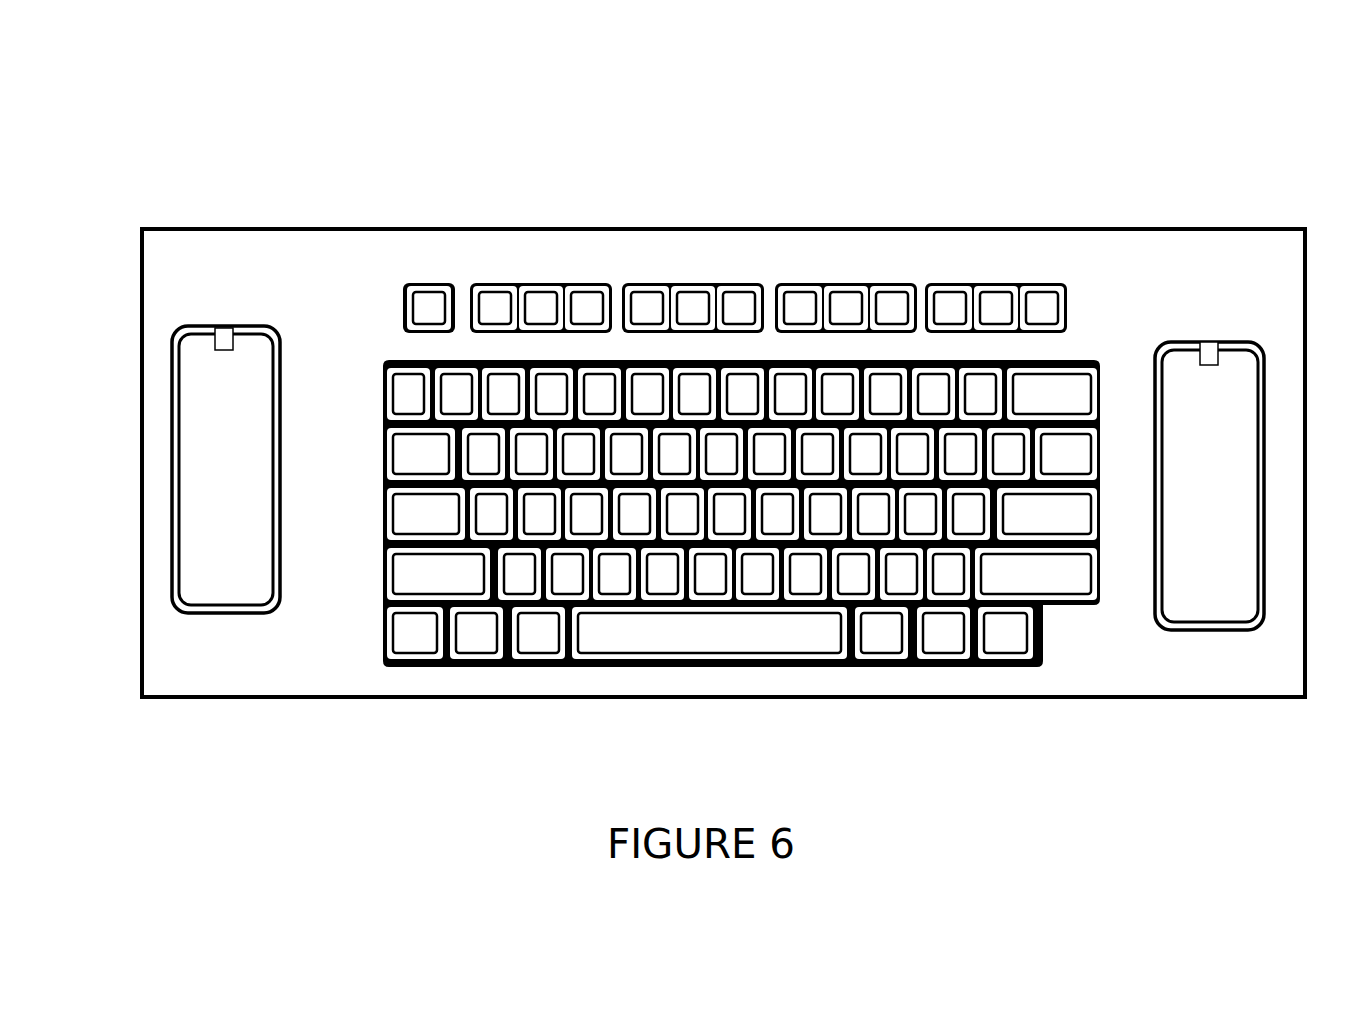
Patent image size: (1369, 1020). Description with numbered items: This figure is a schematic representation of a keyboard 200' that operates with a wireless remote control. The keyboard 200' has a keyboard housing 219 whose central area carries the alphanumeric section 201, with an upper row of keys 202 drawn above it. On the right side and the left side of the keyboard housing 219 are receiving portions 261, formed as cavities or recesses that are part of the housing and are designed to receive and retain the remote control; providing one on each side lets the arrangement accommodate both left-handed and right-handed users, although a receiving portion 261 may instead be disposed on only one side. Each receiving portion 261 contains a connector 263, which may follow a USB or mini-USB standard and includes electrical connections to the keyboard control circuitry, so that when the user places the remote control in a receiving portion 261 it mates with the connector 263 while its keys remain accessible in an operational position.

The keyboard 200' is at (702, 421).
The alphanumeric section 201 is at (384, 402).
The function key row 202 is at (732, 270).
The keyboard housing 219 is at (301, 653).
The receiving portion 261 is at (203, 402).
The connector 263 is at (224, 330).